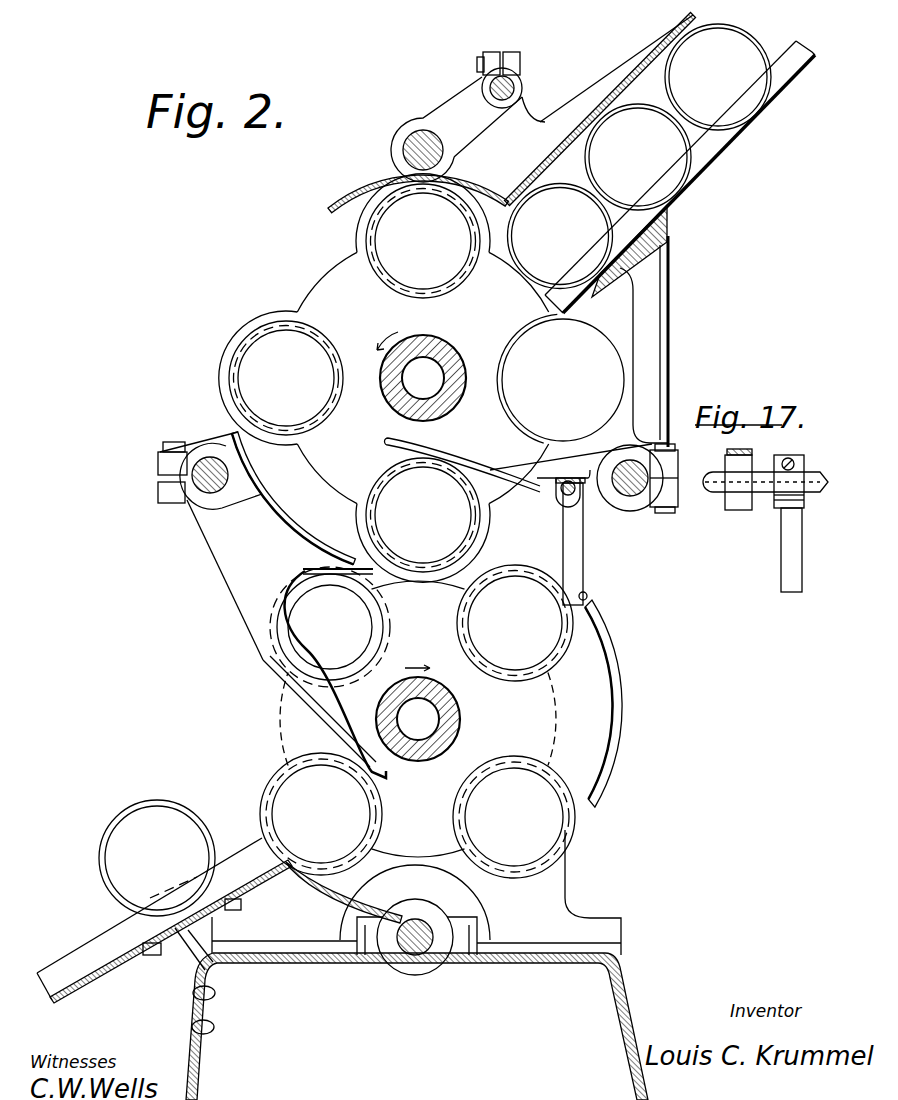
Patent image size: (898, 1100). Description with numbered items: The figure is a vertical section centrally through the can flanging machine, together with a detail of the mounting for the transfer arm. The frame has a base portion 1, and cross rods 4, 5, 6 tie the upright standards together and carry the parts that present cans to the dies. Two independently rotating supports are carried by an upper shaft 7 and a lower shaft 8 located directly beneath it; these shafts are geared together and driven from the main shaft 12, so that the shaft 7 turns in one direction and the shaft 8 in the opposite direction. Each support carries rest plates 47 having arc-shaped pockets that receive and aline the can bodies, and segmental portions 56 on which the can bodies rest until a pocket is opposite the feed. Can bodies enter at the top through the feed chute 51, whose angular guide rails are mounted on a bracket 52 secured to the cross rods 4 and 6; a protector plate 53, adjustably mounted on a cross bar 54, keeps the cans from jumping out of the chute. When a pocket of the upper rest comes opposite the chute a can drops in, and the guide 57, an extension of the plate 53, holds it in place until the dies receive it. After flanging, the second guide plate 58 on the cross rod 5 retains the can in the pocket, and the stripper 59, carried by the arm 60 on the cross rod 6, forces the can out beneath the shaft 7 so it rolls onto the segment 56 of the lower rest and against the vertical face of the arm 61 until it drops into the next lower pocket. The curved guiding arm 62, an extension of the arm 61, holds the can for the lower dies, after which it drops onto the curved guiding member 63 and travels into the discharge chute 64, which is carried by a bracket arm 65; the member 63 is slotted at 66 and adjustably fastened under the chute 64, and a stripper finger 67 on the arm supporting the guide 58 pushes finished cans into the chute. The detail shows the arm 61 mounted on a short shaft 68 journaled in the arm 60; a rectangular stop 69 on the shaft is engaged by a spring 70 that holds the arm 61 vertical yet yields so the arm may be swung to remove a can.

In FIG. 2, the base portion 1 is at (530, 965).
In FIG. 2, the cross rod 4 is at (407, 143).
In FIG. 2, the cross rod 5 is at (204, 458).
In FIG. 2, the cross rod 6 is at (633, 498).
In FIG. 2, the shaft 7 is at (435, 366).
In FIG. 2, the shaft 8 is at (446, 723).
In FIG. 2, the main shaft 12 is at (417, 950).
In FIG. 2, the rest plate 47 is at (343, 352).
In FIG. 2, the feed chute 51 is at (707, 170).
In FIG. 2, the bracket 52 is at (650, 362).
In FIG. 2, the protector plate 53 is at (562, 123).
In FIG. 2, the cross bar 54 is at (513, 82).
In FIG. 2, the segmental portion 56 is at (333, 270).
In FIG. 2, the guide 57 is at (346, 205).
In FIG. 2, the second guide plate 58 is at (280, 521).
In FIG. 2, the stripper 59 is at (472, 466).
In FIG. 2, the arm 60 is at (597, 457).
In FIG. 2, the arm 61 is at (578, 567).
In FIG. 17, the arm 61 is at (790, 557).
In FIG. 2, the curved guiding arm 62 is at (620, 692).
In FIG. 2, the curved guiding member 63 is at (367, 950).
In FIG. 2, the discharge chute 64 is at (95, 962).
In FIG. 2, the bracket arm 65 is at (193, 952).
In FIG. 2, the slot 66 is at (305, 893).
In FIG. 2, the stripper finger 67 is at (320, 684).
In FIG. 2, the short shaft 68 is at (584, 500).
In FIG. 17, the short shaft 68 is at (764, 497).
In FIG. 17, the rectangular stop 69 is at (727, 506).
In FIG. 2, the spring 70 is at (570, 468).
In FIG. 17, the spring 70 is at (728, 452).